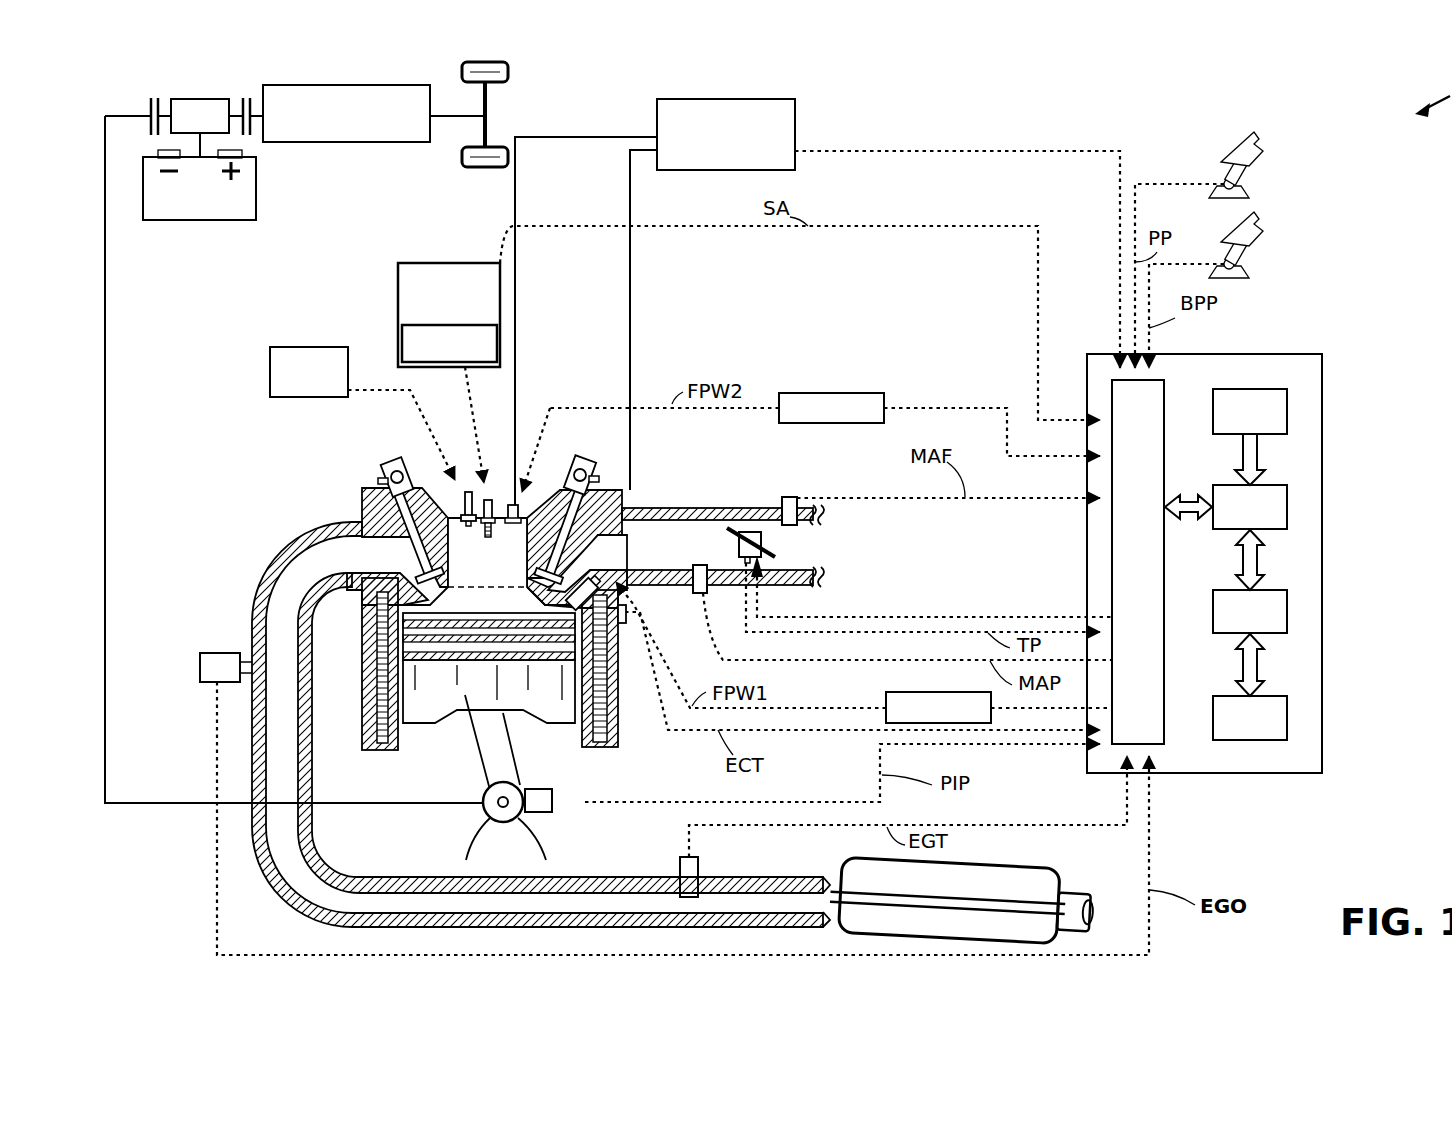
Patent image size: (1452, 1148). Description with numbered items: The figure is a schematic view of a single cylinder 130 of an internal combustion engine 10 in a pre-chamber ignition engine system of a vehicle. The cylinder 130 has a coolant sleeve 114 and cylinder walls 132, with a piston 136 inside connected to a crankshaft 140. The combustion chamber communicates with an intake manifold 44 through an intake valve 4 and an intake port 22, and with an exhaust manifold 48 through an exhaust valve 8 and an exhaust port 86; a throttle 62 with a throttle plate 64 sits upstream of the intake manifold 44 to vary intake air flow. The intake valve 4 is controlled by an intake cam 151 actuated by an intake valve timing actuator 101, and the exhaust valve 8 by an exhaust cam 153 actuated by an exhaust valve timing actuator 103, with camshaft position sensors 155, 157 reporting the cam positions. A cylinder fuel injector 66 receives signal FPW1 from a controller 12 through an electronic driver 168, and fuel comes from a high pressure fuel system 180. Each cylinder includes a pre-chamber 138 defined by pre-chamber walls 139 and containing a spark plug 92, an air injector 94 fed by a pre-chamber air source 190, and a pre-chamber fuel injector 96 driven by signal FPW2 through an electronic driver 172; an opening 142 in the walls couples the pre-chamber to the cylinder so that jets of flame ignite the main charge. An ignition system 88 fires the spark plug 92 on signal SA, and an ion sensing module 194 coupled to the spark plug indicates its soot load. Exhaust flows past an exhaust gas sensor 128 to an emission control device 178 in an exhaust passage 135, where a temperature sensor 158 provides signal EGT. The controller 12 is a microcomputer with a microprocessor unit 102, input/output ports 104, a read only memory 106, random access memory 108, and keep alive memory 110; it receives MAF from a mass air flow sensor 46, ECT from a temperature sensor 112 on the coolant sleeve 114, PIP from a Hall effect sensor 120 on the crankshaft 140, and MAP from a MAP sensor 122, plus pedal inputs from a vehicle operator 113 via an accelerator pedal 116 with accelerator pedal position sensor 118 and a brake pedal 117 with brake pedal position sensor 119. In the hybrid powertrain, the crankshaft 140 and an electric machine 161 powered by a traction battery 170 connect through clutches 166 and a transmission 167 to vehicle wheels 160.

The intake valve 4 is at (543, 510).
The exhaust valve 8 is at (417, 570).
The internal combustion engine 10 is at (345, 333).
The controller 12 is at (1313, 354).
The intake port 22 is at (665, 557).
The intake manifold 44 is at (728, 555).
The mass air flow sensor 46 is at (792, 495).
The exhaust manifold 48 is at (301, 645).
The throttle 62 is at (751, 532).
The throttle plate 64 is at (780, 556).
The cylinder fuel injector 66 is at (585, 584).
The exhaust port 86 is at (356, 561).
The ignition system 88 is at (413, 263).
The spark plug 92 is at (470, 488).
The air injector 94 is at (463, 510).
The pre-chamber fuel injector 96 is at (521, 507).
The intake valve timing actuator 101 is at (595, 462).
The microprocessor unit 102 is at (1287, 505).
The exhaust valve timing actuator 103 is at (395, 468).
The input/output ports 104 is at (1166, 387).
The read only memory 106 is at (1287, 410).
The random access memory 108 is at (1287, 608).
The keep alive memory 110 is at (1287, 718).
The temperature sensor 112 is at (622, 627).
The vehicle operator 113 is at (1258, 150).
The coolant sleeve 114 is at (620, 717).
The accelerator pedal 116 is at (1210, 160).
The brake pedal 117 is at (1210, 240).
The accelerator pedal position sensor 118 is at (1240, 185).
The brake pedal position sensor 119 is at (1240, 265).
The Hall effect sensor 120 is at (540, 813).
The MAP sensor 122 is at (705, 597).
The exhaust gas sensor 128 is at (215, 653).
The cylinder 130 is at (380, 598).
The cylinder walls 132 is at (408, 735).
The exhaust passage 135 is at (418, 926).
The piston 136 is at (462, 695).
The pre-chamber 138 is at (393, 650).
The pre-chamber walls 139 is at (495, 592).
The crankshaft 140 is at (490, 818).
The opening 142 is at (400, 668).
The intake cam 151 is at (575, 490).
The exhaust cam 153 is at (405, 490).
The camshaft position sensor 155 is at (605, 470).
The camshaft position sensor 157 is at (378, 481).
The temperature sensor 158 is at (678, 862).
The vehicle wheels 160 is at (485, 168).
The electric machine 161 is at (178, 98).
The clutch 166 is at (150, 98).
The transmission 167 is at (405, 143).
The electronic driver 168 is at (890, 692).
The traction battery 170 is at (193, 220).
The electronic driver 172 is at (779, 393).
The emission control device 178 is at (1020, 872).
The high pressure fuel system 180 is at (797, 112).
The pre-chamber air source 190 is at (270, 358).
The ion sensing module 194 is at (402, 348).